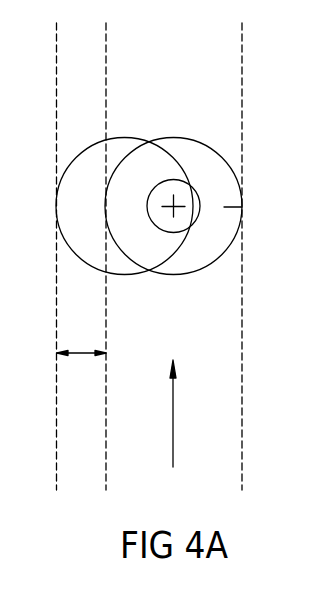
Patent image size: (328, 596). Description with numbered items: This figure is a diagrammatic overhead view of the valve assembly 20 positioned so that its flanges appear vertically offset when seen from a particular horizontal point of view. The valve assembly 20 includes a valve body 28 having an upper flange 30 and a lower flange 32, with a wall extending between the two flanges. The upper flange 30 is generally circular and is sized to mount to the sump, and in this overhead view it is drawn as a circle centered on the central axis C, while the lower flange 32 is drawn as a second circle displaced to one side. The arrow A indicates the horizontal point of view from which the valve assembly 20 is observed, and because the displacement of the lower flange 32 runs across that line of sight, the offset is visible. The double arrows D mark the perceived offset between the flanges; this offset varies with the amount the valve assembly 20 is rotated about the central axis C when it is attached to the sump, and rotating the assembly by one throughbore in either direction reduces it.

The valve assembly 20 is at (311, 122).
The valve body 28 is at (212, 148).
The upper flange 30 is at (242, 207).
The lower flange 32 is at (72, 206).
The central axis C is at (172, 200).
The double arrows indicating variation in offset D is at (81, 353).
The arrow indicating horizontal point of view A is at (173, 423).